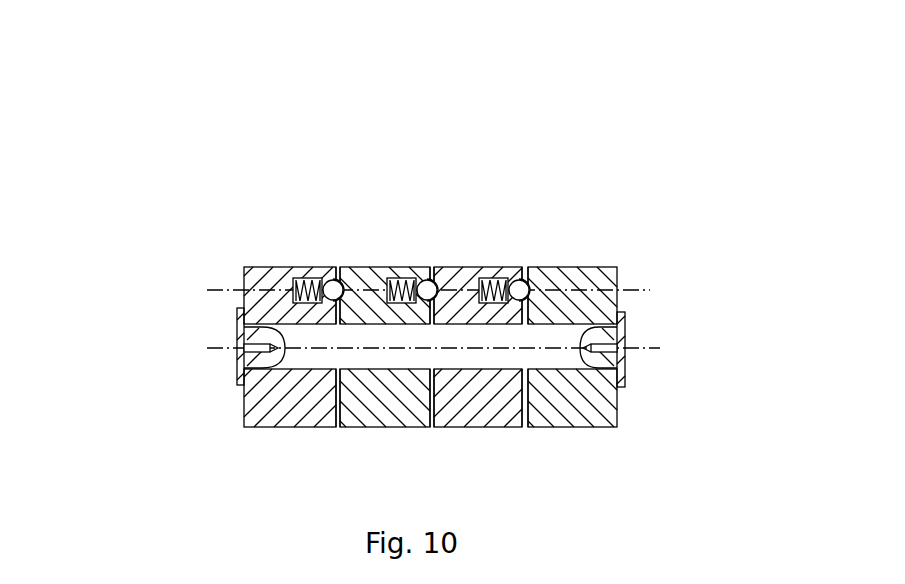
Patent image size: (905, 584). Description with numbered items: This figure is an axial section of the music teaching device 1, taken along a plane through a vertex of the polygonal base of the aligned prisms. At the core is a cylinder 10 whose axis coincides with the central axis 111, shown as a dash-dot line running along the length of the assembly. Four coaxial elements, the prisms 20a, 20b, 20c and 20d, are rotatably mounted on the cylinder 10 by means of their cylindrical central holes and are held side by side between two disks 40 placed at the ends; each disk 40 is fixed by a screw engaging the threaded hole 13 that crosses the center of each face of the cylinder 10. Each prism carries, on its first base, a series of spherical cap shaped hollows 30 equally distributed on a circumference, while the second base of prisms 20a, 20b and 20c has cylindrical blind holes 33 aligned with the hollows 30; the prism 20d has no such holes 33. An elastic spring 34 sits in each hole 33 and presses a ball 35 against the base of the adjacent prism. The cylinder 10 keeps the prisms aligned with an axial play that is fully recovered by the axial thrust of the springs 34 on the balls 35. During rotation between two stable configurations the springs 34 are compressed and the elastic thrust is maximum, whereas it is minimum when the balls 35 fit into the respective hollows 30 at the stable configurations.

The music teaching device 1 is at (52, 100).
The cylinder 10 is at (617, 398).
The threaded hole 13 is at (260, 328).
The coaxial element (prism) 20a is at (279, 303).
The coaxial element (prism) 20b is at (376, 305).
The coaxial element (prism) 20c is at (469, 305).
The coaxial element (prism) 20d is at (562, 300).
The spherical cap shaped hollows 30 is at (342, 300).
The cylindrical blind holes 33 is at (302, 284).
The elastic spring 34 is at (310, 288).
The ball 35 is at (328, 300).
The disk 40 is at (264, 345).
The central axis 111 is at (648, 349).